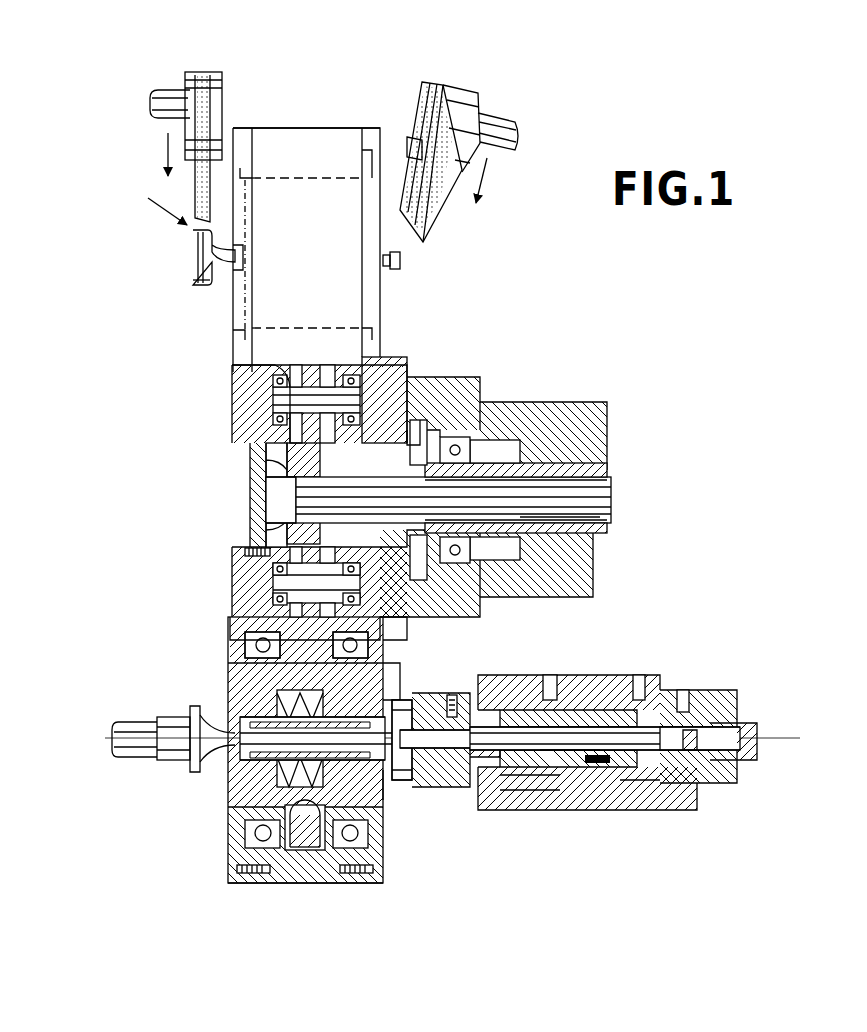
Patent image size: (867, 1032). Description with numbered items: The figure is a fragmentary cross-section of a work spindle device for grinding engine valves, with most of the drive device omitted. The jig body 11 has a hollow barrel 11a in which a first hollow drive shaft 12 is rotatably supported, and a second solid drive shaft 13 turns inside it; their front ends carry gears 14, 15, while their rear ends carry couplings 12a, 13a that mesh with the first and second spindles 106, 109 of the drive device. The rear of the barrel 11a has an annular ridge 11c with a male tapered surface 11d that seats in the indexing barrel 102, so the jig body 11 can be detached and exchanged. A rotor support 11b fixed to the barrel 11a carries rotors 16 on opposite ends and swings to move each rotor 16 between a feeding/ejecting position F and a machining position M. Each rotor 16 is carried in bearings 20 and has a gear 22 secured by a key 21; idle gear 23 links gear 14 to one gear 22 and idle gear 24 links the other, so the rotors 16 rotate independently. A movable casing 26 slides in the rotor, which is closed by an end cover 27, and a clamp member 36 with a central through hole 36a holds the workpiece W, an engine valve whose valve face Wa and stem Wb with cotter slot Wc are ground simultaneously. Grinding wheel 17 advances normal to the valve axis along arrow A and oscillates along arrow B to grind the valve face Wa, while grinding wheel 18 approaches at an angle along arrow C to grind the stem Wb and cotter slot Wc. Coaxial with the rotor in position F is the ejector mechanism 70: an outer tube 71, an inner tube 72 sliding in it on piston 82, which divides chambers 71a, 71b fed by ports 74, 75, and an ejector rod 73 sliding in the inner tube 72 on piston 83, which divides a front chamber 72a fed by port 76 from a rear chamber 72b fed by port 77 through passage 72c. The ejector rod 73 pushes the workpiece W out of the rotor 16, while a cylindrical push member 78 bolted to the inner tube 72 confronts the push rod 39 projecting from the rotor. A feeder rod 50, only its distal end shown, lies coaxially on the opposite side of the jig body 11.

The jig body 11 is at (150, 480).
The barrel 11a is at (388, 372).
The rotor support 11b is at (248, 396).
The annular ridge 11c is at (425, 425).
The male tapered surface 11d is at (411, 408).
The first hollow drive shaft 12 is at (300, 497).
The coupling 12a is at (432, 425).
The second solid drive shaft 13 is at (290, 514).
The coupling 13a is at (440, 491).
The gear 14 is at (300, 464).
The gear 15 is at (290, 530).
The rotor 16 is at (297, 160).
The grinding wheel 17 is at (207, 80).
The grinding wheel 18 is at (446, 92).
The bearings 20 is at (250, 630).
The key 21 is at (297, 848).
The gear 22 is at (311, 840).
The idle gear 23 is at (290, 433).
The idle gear 24 is at (285, 597).
The movable casing 26 is at (252, 718).
The end cover 27 is at (383, 667).
The clamp member 36 is at (277, 780).
The central through hole 36a is at (258, 762).
The push rod 39 is at (387, 785).
The feeder rod 50 is at (121, 724).
The ejector mechanism 70 is at (623, 742).
The outer tube 71 is at (588, 680).
The chamber 71a is at (550, 782).
The chamber 71b is at (636, 802).
The inner tube 72 is at (557, 710).
The front chamber 72a is at (591, 768).
The rear chamber 72b is at (696, 724).
The passage 72c is at (713, 780).
The ejector rod 73 is at (500, 733).
The port 74 is at (548, 680).
The port 75 is at (637, 680).
The port 76 is at (452, 695).
The port 77 is at (682, 696).
The cylindrical push member 78 is at (404, 785).
The piston 82 is at (598, 766).
The piston 83 is at (687, 762).
The indexing barrel 102 is at (482, 380).
The first spindle 106 is at (607, 474).
The second spindle 109 is at (596, 512).
The machining position M is at (345, 67).
The feeding/ejecting position F is at (402, 906).
The workpiece W is at (193, 267).
The valve face Wa is at (207, 285).
The stem Wb is at (384, 255).
The cotter slot Wc is at (395, 269).
The arrow A is at (153, 149).
The arrow B is at (157, 211).
The arrow C is at (495, 180).